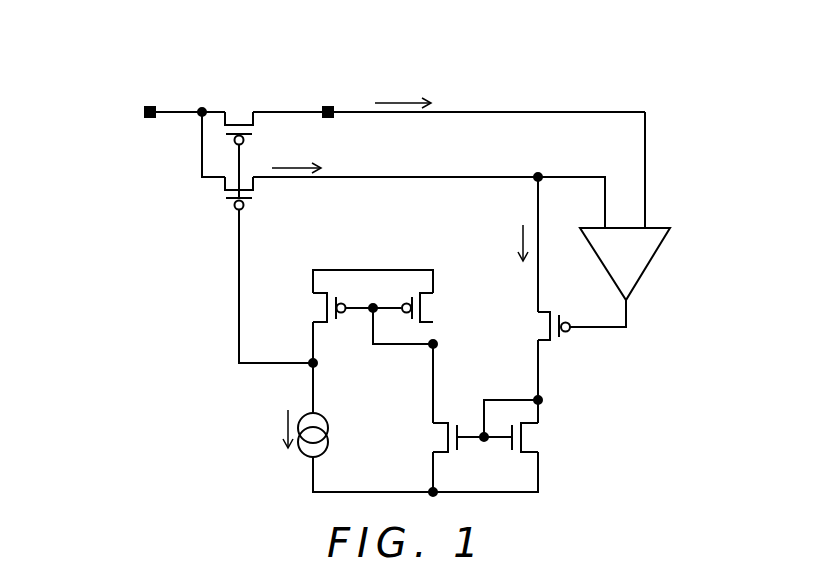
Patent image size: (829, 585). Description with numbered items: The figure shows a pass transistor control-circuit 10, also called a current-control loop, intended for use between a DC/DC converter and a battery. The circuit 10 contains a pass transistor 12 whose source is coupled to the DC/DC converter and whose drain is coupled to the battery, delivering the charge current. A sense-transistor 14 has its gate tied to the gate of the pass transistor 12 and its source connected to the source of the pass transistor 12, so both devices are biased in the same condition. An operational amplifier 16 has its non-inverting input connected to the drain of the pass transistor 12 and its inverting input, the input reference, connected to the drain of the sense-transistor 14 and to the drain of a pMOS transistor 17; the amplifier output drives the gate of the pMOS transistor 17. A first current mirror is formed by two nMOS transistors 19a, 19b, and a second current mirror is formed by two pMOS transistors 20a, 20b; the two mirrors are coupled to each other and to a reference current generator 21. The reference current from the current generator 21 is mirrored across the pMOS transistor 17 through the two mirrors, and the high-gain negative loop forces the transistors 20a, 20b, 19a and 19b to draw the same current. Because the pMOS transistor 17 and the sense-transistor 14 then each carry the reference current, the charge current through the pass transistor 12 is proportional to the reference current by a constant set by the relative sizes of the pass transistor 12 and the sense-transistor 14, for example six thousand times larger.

The pass transistor control-circuit 10 is at (103, 50).
The pass transistor 12 is at (240, 114).
The sense-transistor 14 is at (220, 196).
The operational amplifier 16 is at (643, 283).
The pMOS transistor 17 is at (518, 321).
The nMOS transistor M3 19a is at (414, 432).
The nMOS transistor M4 19b is at (556, 432).
The pMOS transistor M2 20a is at (293, 303).
The pMOS transistor M1 20b is at (451, 303).
The current generator 21 is at (298, 456).